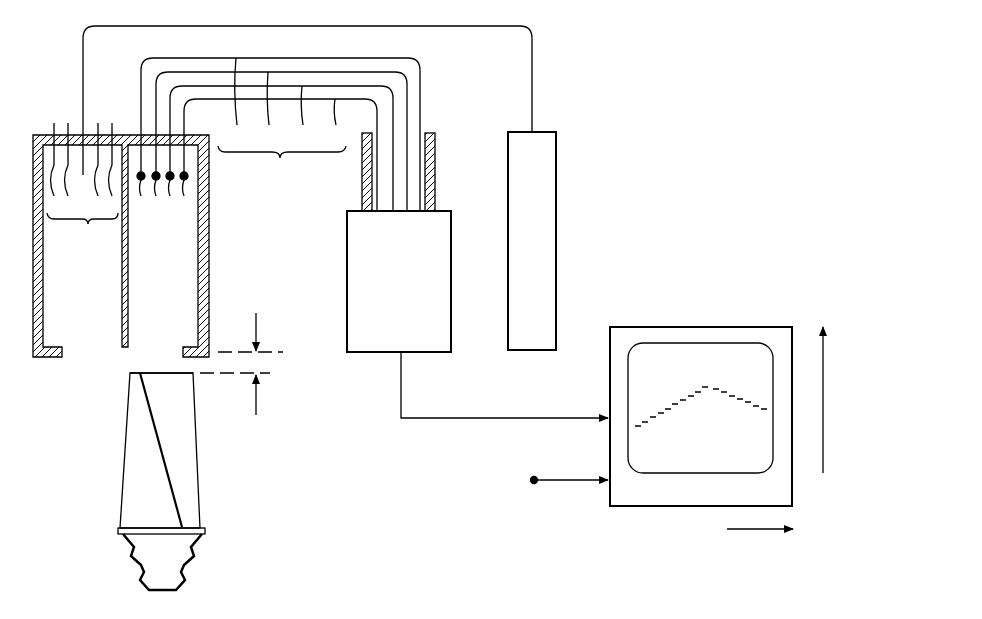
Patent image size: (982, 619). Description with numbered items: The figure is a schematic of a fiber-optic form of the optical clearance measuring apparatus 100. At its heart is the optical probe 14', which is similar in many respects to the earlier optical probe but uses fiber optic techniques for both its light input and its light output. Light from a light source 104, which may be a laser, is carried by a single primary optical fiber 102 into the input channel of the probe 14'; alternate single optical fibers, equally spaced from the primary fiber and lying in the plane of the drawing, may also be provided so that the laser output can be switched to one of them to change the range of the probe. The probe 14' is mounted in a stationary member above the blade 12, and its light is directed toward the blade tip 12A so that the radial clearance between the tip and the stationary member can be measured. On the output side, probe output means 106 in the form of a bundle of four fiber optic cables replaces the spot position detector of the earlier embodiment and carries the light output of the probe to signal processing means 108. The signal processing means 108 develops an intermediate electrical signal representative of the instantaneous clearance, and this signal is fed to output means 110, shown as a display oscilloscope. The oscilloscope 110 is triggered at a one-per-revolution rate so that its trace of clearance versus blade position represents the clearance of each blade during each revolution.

The optical clearance measuring apparatus 100 is at (730, 172).
The optical fiber 102 is at (572, 76).
The light source 104 is at (557, 268).
The probe output means 106 is at (326, 134).
The signal processing means 108 is at (346, 298).
The output means 110 is at (705, 327).
The blade 12 is at (128, 440).
The blade tip 12A is at (130, 368).
The optical probe 14' is at (150, 246).